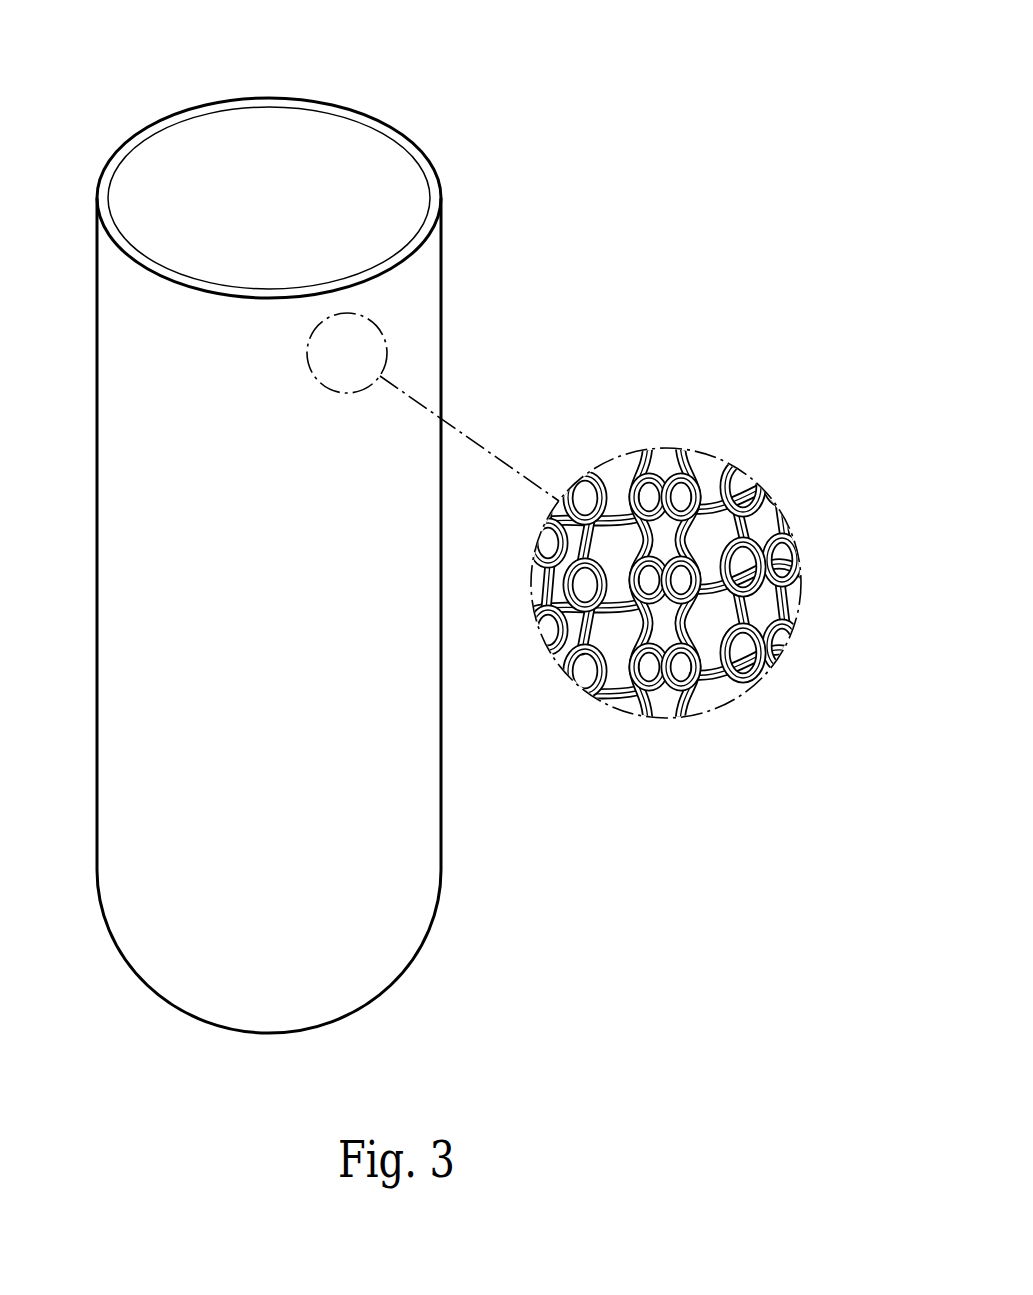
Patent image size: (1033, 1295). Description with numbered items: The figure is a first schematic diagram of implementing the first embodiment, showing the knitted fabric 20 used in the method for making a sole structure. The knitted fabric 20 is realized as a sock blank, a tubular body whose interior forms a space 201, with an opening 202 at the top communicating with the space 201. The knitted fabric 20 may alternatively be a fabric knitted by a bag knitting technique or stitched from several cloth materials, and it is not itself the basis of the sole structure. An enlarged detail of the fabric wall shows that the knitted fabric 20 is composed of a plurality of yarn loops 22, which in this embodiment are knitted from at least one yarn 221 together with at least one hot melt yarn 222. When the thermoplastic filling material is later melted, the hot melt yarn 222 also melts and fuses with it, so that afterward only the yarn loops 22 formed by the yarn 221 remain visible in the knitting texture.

The knitted fabric 20 is at (696, 29).
The space 201 is at (407, 187).
The opening 202 is at (202, 115).
The yarn loops 22 is at (694, 475).
The yarn 221 is at (628, 485).
The hot melt yarn 222 is at (717, 690).